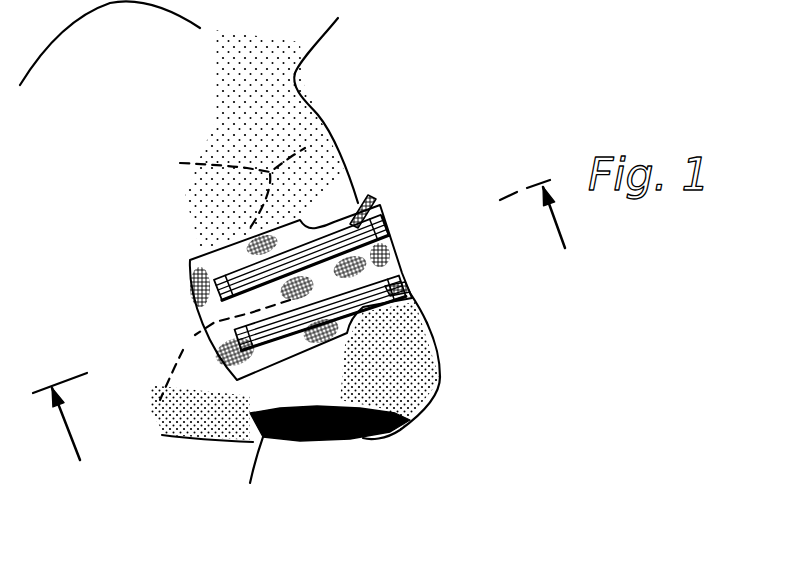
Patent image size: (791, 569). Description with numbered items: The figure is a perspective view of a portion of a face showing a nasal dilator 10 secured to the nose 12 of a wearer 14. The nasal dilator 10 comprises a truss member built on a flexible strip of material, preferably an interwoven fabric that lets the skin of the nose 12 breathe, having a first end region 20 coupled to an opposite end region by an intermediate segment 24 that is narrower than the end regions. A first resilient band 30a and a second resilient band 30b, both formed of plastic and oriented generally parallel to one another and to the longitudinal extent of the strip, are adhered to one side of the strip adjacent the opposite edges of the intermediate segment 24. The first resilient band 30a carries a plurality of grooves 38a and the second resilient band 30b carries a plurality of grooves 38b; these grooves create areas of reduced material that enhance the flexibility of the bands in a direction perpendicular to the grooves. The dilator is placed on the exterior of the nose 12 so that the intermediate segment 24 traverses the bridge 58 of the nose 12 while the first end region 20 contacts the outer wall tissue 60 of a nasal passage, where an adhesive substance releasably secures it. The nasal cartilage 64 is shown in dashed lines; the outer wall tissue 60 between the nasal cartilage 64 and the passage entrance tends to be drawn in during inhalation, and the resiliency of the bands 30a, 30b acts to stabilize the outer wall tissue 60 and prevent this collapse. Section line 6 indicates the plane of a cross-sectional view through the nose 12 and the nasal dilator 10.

The section line 6- 6 is at (316, 329).
The nasal dilator 10 is at (312, 274).
The nose 12 is at (445, 358).
The wearer 14 is at (333, 76).
The first end region 20 is at (230, 322).
The intermediate segment 24 is at (388, 233).
The first resilient band 30a is at (378, 210).
The second resilient band 30b is at (363, 307).
The grooves 38a is at (366, 210).
The grooves 38b is at (407, 287).
The bridge 58 is at (413, 293).
The outer wall tissue 60 is at (367, 347).
The nasal cartilage 64 is at (218, 270).